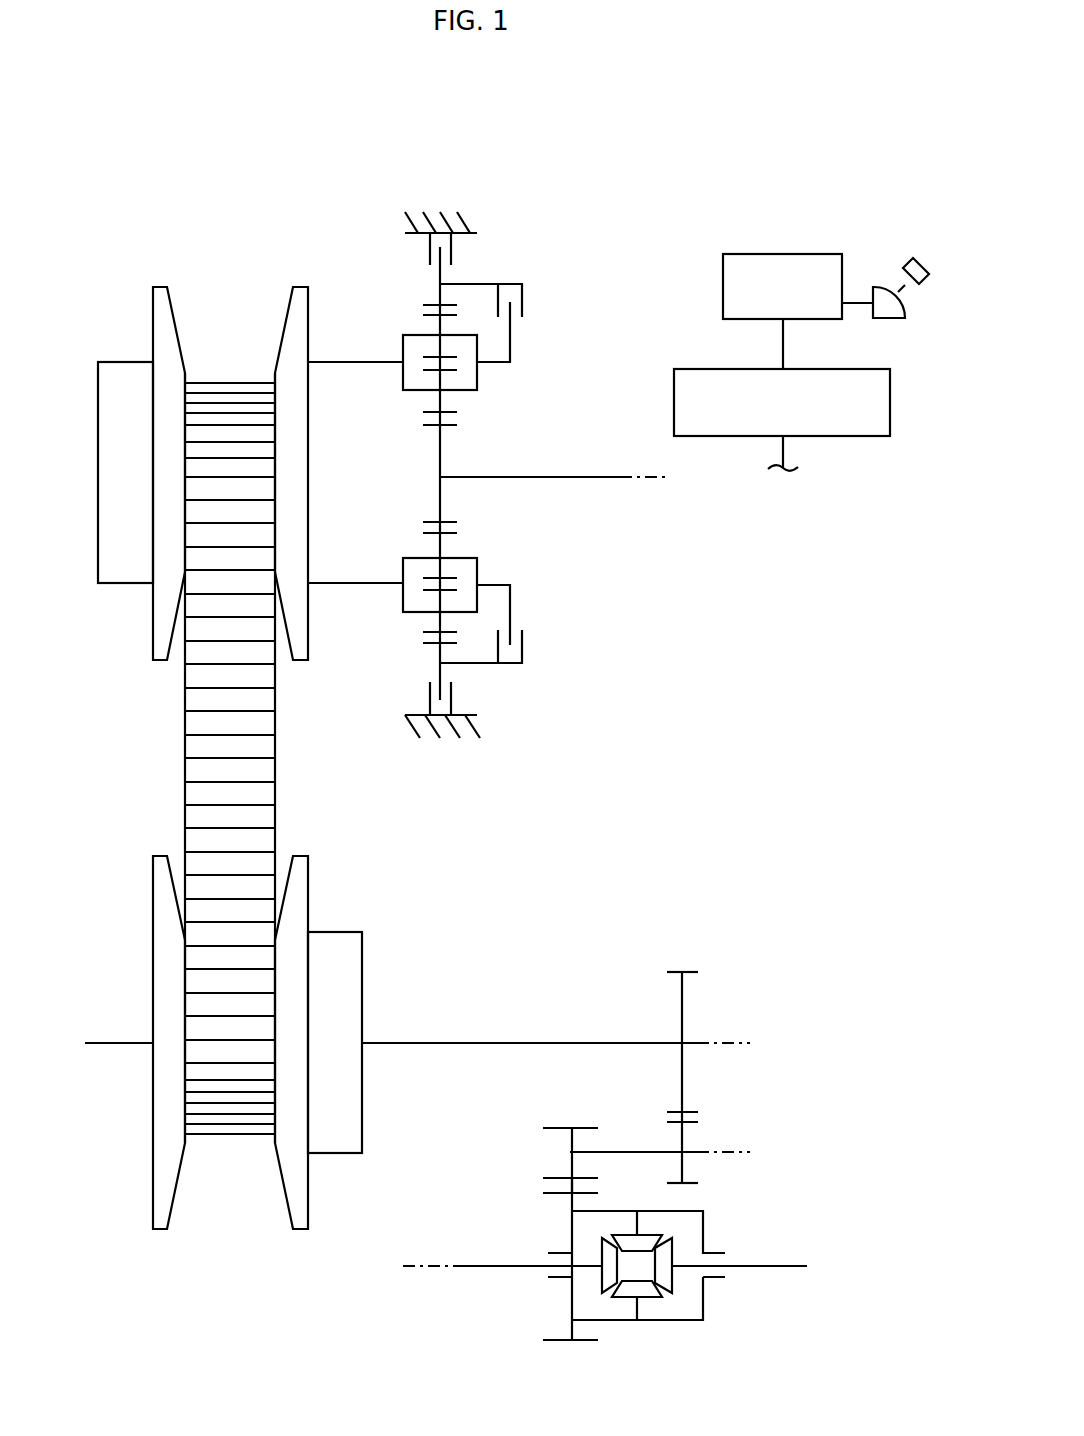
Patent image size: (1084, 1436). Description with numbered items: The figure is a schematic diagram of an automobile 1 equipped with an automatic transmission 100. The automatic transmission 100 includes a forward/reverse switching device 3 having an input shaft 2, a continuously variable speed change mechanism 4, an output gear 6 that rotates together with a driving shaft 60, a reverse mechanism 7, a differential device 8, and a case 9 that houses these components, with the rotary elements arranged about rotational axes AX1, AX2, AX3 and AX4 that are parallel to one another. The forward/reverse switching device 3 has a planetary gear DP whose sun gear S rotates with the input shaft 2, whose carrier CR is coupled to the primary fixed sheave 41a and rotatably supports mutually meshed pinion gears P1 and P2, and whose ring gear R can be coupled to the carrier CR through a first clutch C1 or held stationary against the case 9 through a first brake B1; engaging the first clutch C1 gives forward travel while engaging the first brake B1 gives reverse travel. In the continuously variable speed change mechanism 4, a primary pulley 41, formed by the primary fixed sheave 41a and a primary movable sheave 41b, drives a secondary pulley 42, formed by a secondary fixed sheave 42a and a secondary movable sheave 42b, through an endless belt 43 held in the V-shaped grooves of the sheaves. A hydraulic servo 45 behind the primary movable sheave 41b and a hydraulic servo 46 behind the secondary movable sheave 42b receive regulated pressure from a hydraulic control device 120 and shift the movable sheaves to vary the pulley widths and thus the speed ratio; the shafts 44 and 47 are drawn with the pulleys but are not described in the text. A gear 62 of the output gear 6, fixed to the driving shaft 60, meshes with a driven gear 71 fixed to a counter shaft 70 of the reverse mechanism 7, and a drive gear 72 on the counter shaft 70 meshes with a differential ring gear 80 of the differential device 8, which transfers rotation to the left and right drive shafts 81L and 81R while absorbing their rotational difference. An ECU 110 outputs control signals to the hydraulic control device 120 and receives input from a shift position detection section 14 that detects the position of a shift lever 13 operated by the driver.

The automobile 1 is at (708, 135).
The automatic transmission 100 is at (475, 166).
The input shaft 2 is at (570, 476).
The forward/reverse switching device 3 is at (542, 240).
The continuously variable speed change mechanism 4 is at (108, 250).
The output gear 6 is at (695, 952).
The reverse mechanism 7 is at (715, 1127).
The differential device 8 is at (748, 1238).
The case 9 is at (415, 240).
The shift lever 13 is at (905, 265).
The shift position detection section 14 is at (890, 320).
The primary pulley 41 is at (288, 212).
The primary fixed sheave 41a is at (286, 313).
The primary movable sheave 41b is at (173, 313).
The secondary pulley 42 is at (288, 1305).
The secondary fixed sheave 42a is at (176, 1232).
The secondary movable sheave 42b is at (285, 1232).
The belt 43 is at (185, 725).
The secondary shaft 44 is at (108, 1046).
The hydraulic servo 45 is at (122, 585).
The hydraulic servo 46 is at (335, 1158).
The output shaft 47 is at (392, 1046).
The driving shaft 60 is at (548, 1042).
The gear 62 is at (672, 970).
The counter shaft 70 is at (625, 1151).
The driven gear 71 is at (686, 1185).
The drive gear 72 is at (578, 1127).
The differential ring gear 80 is at (558, 1197).
The left drive shaft 81L is at (493, 1267).
The right drive shaft 81R is at (778, 1267).
The ECU 110 is at (797, 238).
The hydraulic control device 120 is at (812, 353).
The rotational axis AX1 is at (674, 477).
The rotational axis AX2 is at (753, 1043).
The rotational axis AX3 is at (753, 1153).
The rotational axis AX4 is at (406, 1266).
The first brake B1 is at (452, 250).
The first clutch C1 is at (522, 303).
The carrier CR is at (403, 383).
The planetary gear DP is at (385, 328).
The pinion gear P1 is at (452, 412).
The pinion gear P2 is at (432, 632).
The sun gear S is at (425, 432).
The ring gear R is at (430, 645).